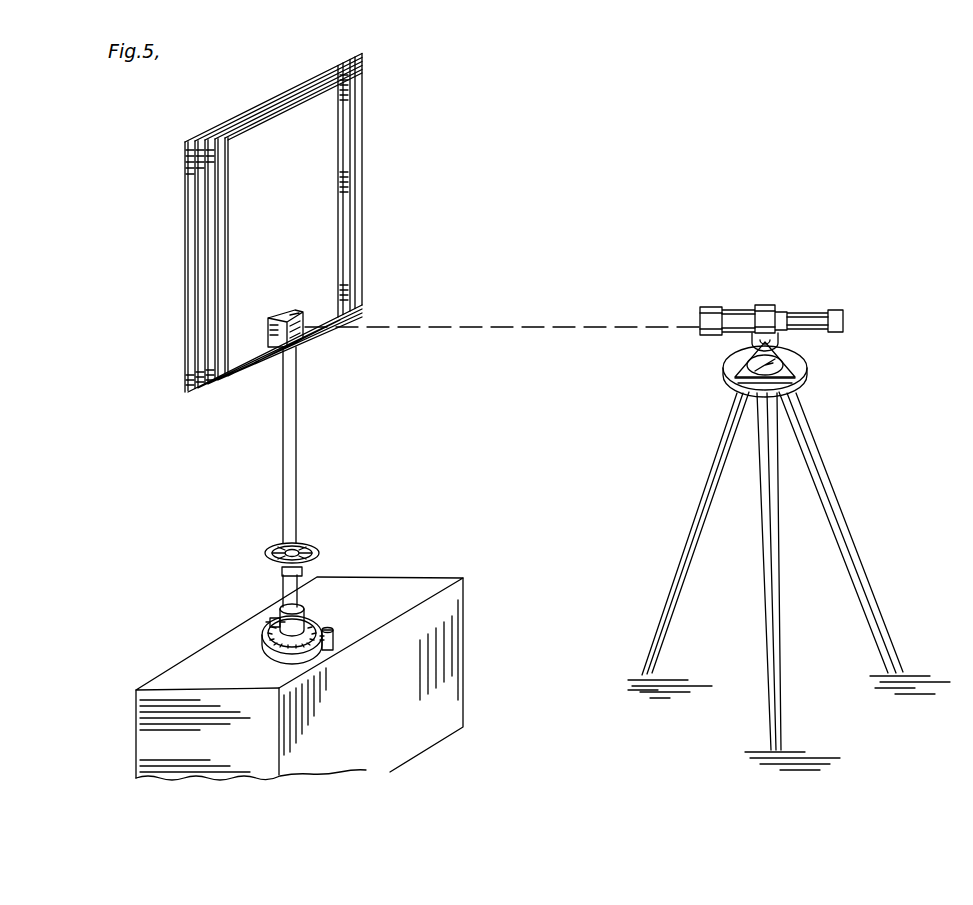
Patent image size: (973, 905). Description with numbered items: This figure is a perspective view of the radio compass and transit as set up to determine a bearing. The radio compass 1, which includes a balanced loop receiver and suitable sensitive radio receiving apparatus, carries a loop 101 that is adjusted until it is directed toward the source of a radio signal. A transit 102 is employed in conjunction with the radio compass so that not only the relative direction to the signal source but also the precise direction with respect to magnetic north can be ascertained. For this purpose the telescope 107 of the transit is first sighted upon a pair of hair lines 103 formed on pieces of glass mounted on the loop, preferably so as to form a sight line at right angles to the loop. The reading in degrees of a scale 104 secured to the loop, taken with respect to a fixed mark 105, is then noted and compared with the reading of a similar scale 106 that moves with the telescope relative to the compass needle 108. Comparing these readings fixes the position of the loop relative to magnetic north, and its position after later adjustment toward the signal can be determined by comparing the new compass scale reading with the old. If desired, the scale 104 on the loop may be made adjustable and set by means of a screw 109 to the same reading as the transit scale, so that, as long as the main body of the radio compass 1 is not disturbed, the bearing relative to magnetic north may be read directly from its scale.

The radio compass 1 is at (400, 690).
The loop 101 is at (348, 168).
The transit 102 is at (808, 420).
The hair lines 103 is at (300, 330).
The scale 104 is at (300, 625).
The fixed mark 105 is at (334, 650).
The scale 106 is at (782, 380).
The telescope 107 is at (808, 318).
The compass needle 108 is at (775, 360).
The screw 109 is at (268, 615).